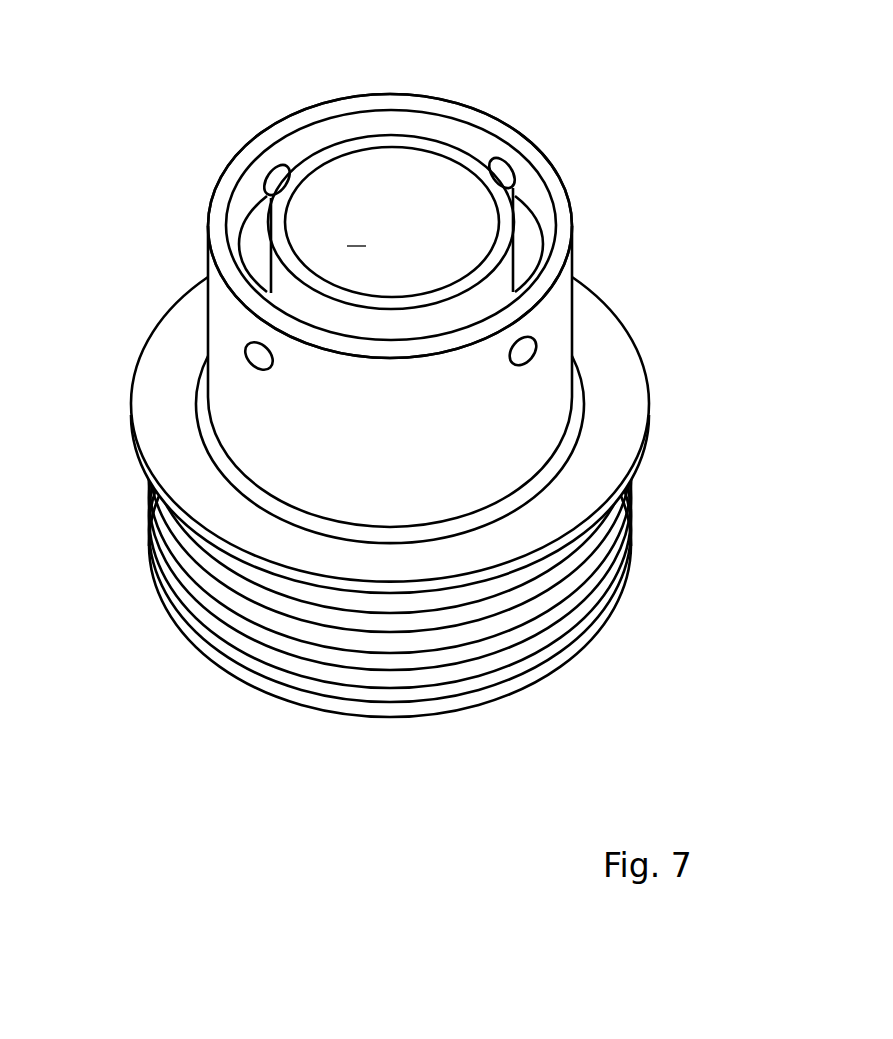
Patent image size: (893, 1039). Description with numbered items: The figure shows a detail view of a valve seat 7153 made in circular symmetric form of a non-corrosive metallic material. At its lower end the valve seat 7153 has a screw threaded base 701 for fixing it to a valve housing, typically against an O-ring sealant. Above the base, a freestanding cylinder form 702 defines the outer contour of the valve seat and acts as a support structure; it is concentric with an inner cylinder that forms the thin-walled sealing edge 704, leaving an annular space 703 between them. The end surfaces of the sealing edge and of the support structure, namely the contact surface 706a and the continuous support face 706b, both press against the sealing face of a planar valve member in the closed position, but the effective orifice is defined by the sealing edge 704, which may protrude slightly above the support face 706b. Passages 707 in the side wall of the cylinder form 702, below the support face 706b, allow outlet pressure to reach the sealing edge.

The screw threaded base 701 is at (293, 623).
The freestanding cylinder form 702 is at (258, 417).
The annular space 703 is at (255, 243).
The sealing edge 704 is at (473, 175).
The contact surface of the sealing edge 706a is at (480, 268).
The continuous support face 706b is at (293, 130).
The passages 707 is at (271, 174).
The valve seat 7153 is at (617, 747).